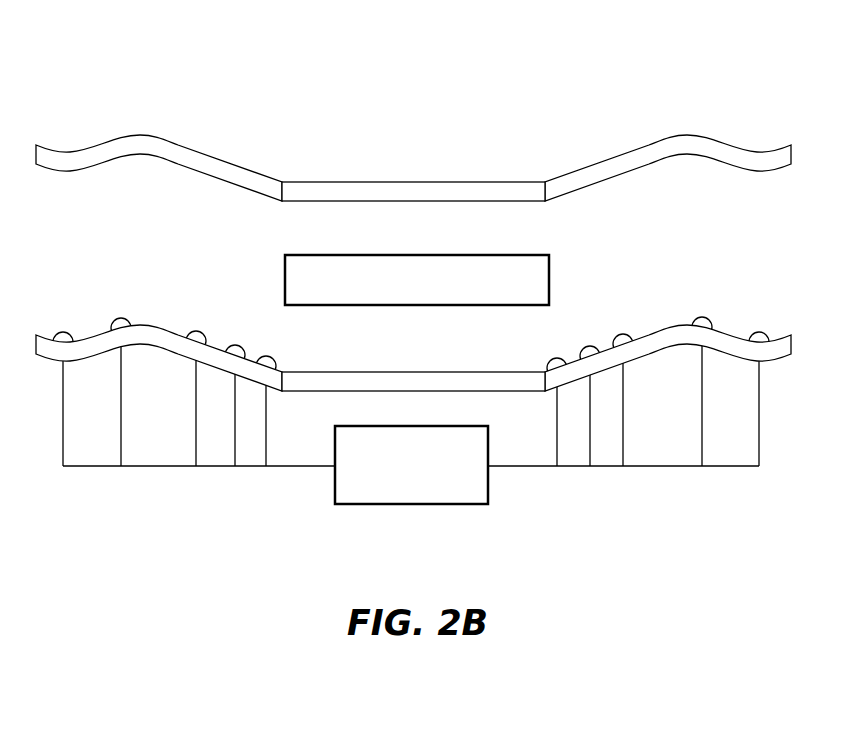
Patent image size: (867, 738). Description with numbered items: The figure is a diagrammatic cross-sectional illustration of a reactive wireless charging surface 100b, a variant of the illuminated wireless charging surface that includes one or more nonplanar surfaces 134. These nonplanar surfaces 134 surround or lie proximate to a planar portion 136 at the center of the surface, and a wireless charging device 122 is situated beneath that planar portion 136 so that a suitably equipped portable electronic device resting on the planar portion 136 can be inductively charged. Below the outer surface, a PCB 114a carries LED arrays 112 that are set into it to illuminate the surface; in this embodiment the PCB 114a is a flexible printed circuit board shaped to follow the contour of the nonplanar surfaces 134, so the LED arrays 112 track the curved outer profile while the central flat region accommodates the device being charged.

The reactive wireless charging surface 100b is at (98, 54).
The nonplanar surfaces 134 is at (148, 142).
The planar portion 136 is at (317, 190).
The wireless charging device 122 is at (400, 292).
The PCB 114a is at (149, 332).
The LED arrays 112 is at (619, 332).